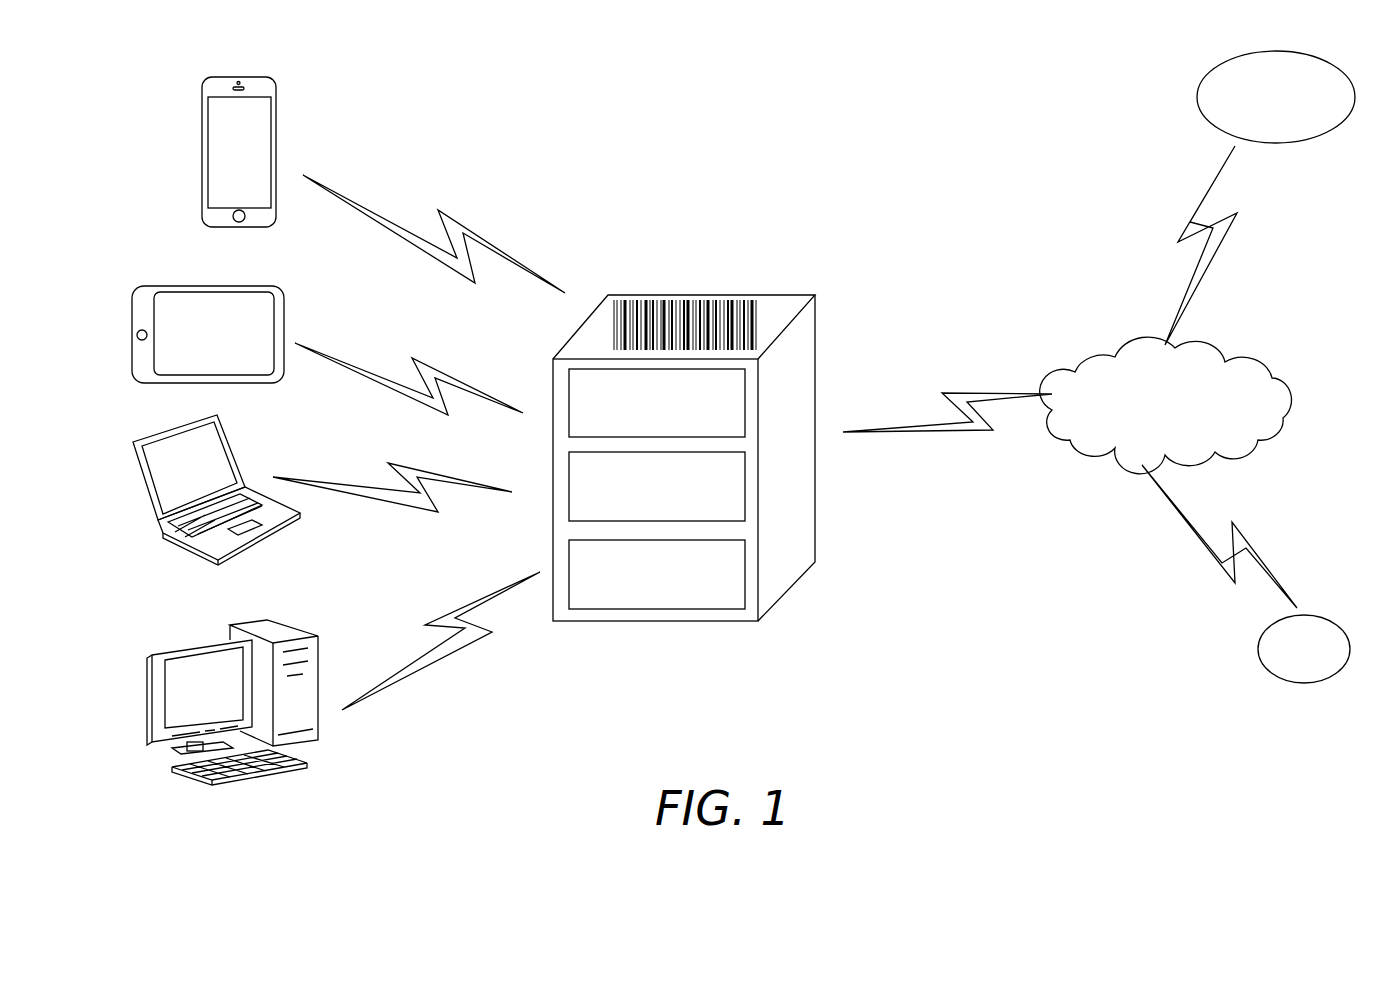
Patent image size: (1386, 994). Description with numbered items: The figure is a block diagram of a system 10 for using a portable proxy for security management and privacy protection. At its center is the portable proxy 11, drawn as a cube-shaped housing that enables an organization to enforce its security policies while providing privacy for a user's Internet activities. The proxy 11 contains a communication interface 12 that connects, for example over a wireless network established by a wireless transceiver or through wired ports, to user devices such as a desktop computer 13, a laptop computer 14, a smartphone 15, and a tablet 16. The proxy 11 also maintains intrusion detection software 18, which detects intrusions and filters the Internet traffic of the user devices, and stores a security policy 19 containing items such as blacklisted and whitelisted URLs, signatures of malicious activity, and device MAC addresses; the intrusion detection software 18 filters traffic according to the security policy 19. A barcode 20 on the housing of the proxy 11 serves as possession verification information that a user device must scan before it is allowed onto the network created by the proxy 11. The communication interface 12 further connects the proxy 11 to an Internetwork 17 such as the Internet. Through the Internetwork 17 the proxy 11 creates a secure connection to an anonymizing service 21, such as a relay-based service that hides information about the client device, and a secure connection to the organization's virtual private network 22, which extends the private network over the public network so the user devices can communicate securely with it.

The system 10 is at (805, 116).
The portable proxy 11 is at (815, 344).
The communication interface 12 is at (745, 405).
The desktop computer 13 is at (181, 645).
The laptop computer 14 is at (160, 430).
The smartphone 15 is at (172, 286).
The tablet 16 is at (200, 138).
The Internetwork 17 is at (1258, 367).
The intrusion detection software 18 is at (705, 610).
The security policy 19 is at (745, 490).
The barcode 20 is at (722, 303).
The anonymizing service 21 is at (1197, 99).
The virtual private network 22 is at (1258, 652).